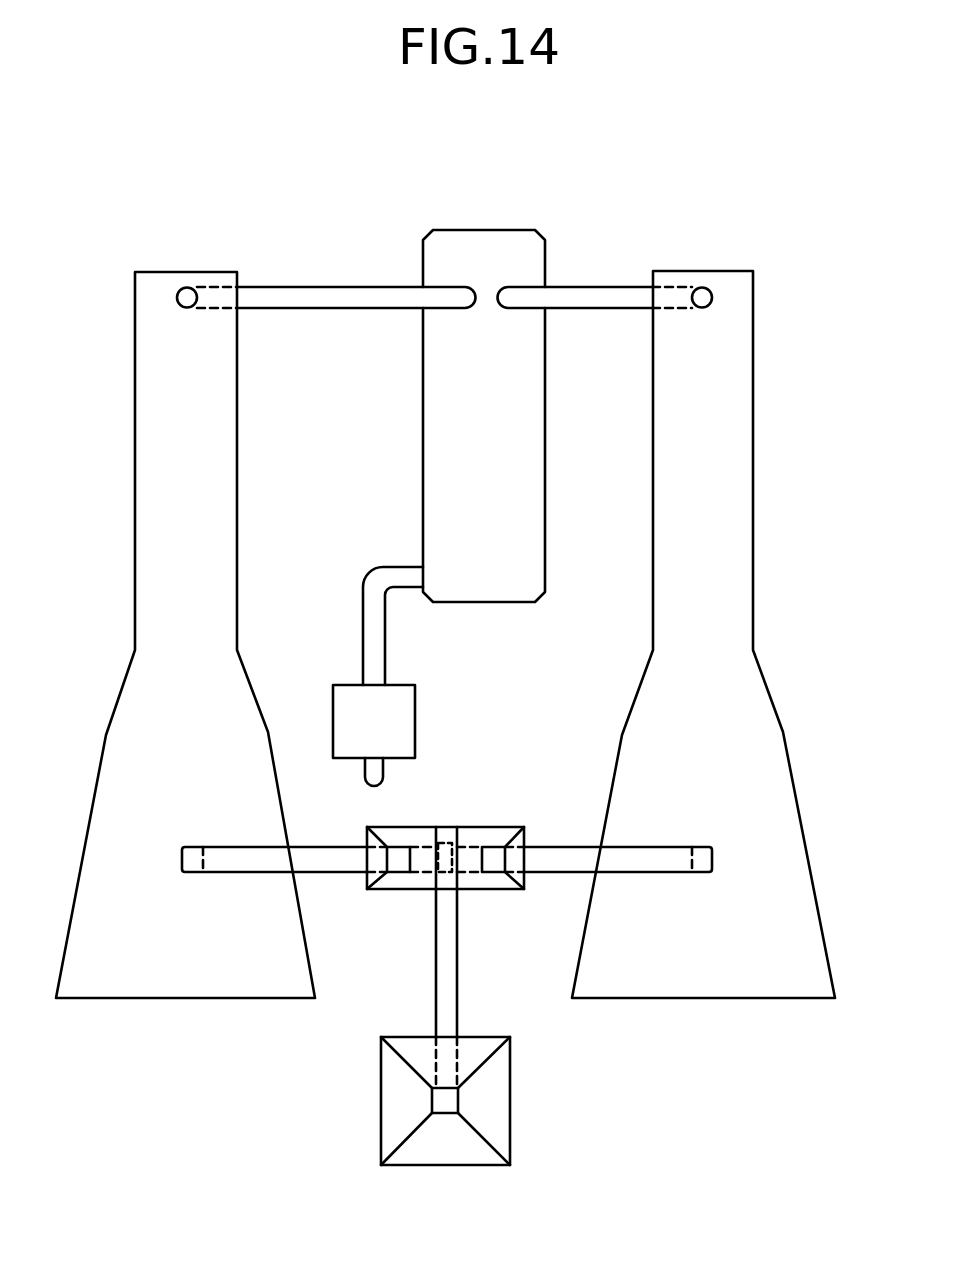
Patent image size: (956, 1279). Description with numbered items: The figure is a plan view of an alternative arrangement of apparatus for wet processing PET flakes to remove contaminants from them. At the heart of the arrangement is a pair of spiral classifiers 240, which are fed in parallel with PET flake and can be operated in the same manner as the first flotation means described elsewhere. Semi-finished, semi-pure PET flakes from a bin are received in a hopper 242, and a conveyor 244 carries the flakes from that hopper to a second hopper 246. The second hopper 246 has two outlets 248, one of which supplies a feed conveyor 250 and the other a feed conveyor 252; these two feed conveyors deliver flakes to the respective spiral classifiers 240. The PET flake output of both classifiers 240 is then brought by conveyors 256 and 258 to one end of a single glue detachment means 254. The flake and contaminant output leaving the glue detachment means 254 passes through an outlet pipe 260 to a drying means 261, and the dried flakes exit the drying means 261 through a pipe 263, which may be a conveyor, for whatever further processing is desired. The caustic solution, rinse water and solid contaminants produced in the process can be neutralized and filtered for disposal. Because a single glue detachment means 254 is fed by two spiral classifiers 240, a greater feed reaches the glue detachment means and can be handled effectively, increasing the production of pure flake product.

The spiral classifiers 240 is at (151, 998).
The hopper 242 is at (510, 1097).
The conveyor 244 is at (457, 987).
The second hopper 246 is at (389, 827).
The outlets 248 is at (400, 857).
The feed conveyor 250 is at (322, 873).
The feed conveyor 252 is at (647, 847).
The glue detachment means 254 is at (545, 231).
The conveyor 256 is at (607, 287).
The conveyor 258 is at (308, 286).
The outlet pipe 260 is at (395, 567).
The drying means 261 is at (415, 717).
The pipe 263 is at (385, 775).